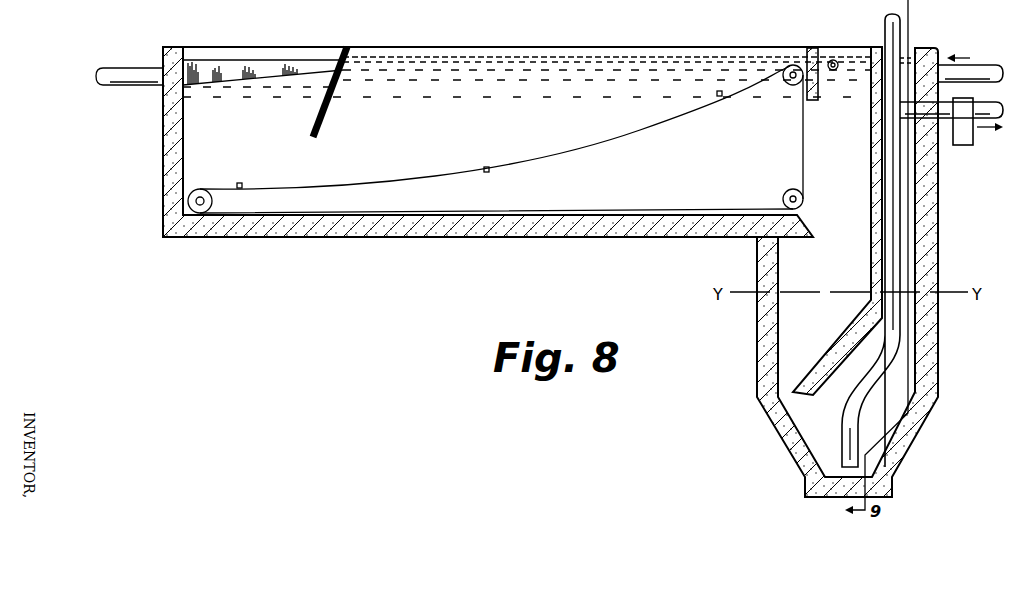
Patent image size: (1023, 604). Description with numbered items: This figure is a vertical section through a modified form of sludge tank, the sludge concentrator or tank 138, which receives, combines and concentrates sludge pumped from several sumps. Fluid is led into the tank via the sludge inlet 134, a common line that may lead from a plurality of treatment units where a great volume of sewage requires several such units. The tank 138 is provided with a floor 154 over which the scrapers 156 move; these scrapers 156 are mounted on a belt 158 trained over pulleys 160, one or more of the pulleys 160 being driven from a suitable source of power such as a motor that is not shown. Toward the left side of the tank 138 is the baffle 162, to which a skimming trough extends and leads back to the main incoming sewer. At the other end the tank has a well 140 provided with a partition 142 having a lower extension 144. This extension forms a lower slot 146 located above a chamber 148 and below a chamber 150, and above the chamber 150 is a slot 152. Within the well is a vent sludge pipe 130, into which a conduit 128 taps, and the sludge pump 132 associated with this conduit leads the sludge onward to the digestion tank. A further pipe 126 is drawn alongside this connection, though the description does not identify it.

The inlet pipe 126 is at (980, 66).
The conduit 128 is at (978, 103).
The vent sludge pipe 130 is at (890, 343).
The sludge pump 132 is at (965, 146).
The sludge inlet 134 is at (836, 59).
The sludge concentrator or tank 138 is at (353, 238).
The well 140 is at (790, 455).
The partition 142 is at (870, 166).
The lower extension 144 is at (836, 345).
The lower slot 146 is at (788, 392).
The chamber 148 is at (828, 407).
The chamber 150 is at (825, 263).
The slot 152 is at (817, 239).
The floor 154 is at (540, 238).
The scrapers 156 is at (241, 183).
The belt 158 is at (600, 148).
The pulleys 160 is at (213, 202).
The baffle 162 is at (320, 104).